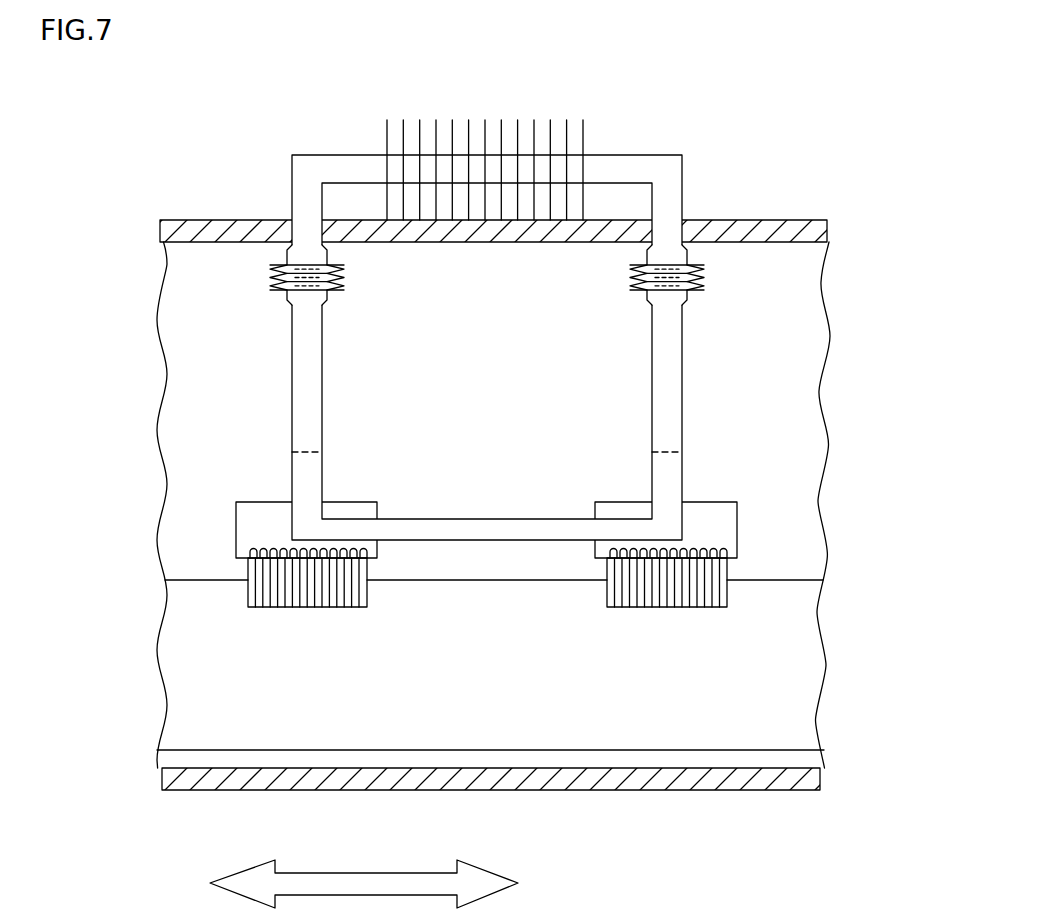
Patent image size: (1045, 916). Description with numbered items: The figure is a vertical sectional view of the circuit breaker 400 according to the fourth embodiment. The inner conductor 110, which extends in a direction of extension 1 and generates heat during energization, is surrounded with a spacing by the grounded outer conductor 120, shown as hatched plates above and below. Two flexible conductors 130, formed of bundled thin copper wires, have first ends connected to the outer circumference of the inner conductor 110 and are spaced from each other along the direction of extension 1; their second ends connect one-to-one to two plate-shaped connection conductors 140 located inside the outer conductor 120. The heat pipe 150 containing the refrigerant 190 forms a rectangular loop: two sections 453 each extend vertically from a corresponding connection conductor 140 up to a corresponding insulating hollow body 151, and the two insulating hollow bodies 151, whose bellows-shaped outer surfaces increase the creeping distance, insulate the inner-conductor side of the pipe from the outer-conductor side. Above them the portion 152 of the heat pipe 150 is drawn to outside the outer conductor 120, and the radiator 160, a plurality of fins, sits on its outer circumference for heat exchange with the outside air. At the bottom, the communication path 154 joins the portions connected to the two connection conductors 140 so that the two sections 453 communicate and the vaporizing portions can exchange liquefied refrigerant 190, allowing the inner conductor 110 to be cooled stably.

The circuit breaker 400 is at (831, 100).
The inner conductor 110 is at (793, 670).
The outer conductor 120 is at (205, 219).
The flexible conductor 130 is at (727, 592).
The connection conductor 140 is at (737, 528).
The heat pipe 150 is at (628, 156).
The insulating hollow body 151 is at (270, 273).
The portion of heat pipe drawn to outside of outer conductor 152 is at (330, 152).
The communication path 154 is at (498, 541).
The radiator 160 is at (388, 122).
The refrigerant 190 is at (665, 468).
The section of heat pipe 453 is at (288, 370).
The direction of extension 1 is at (518, 883).